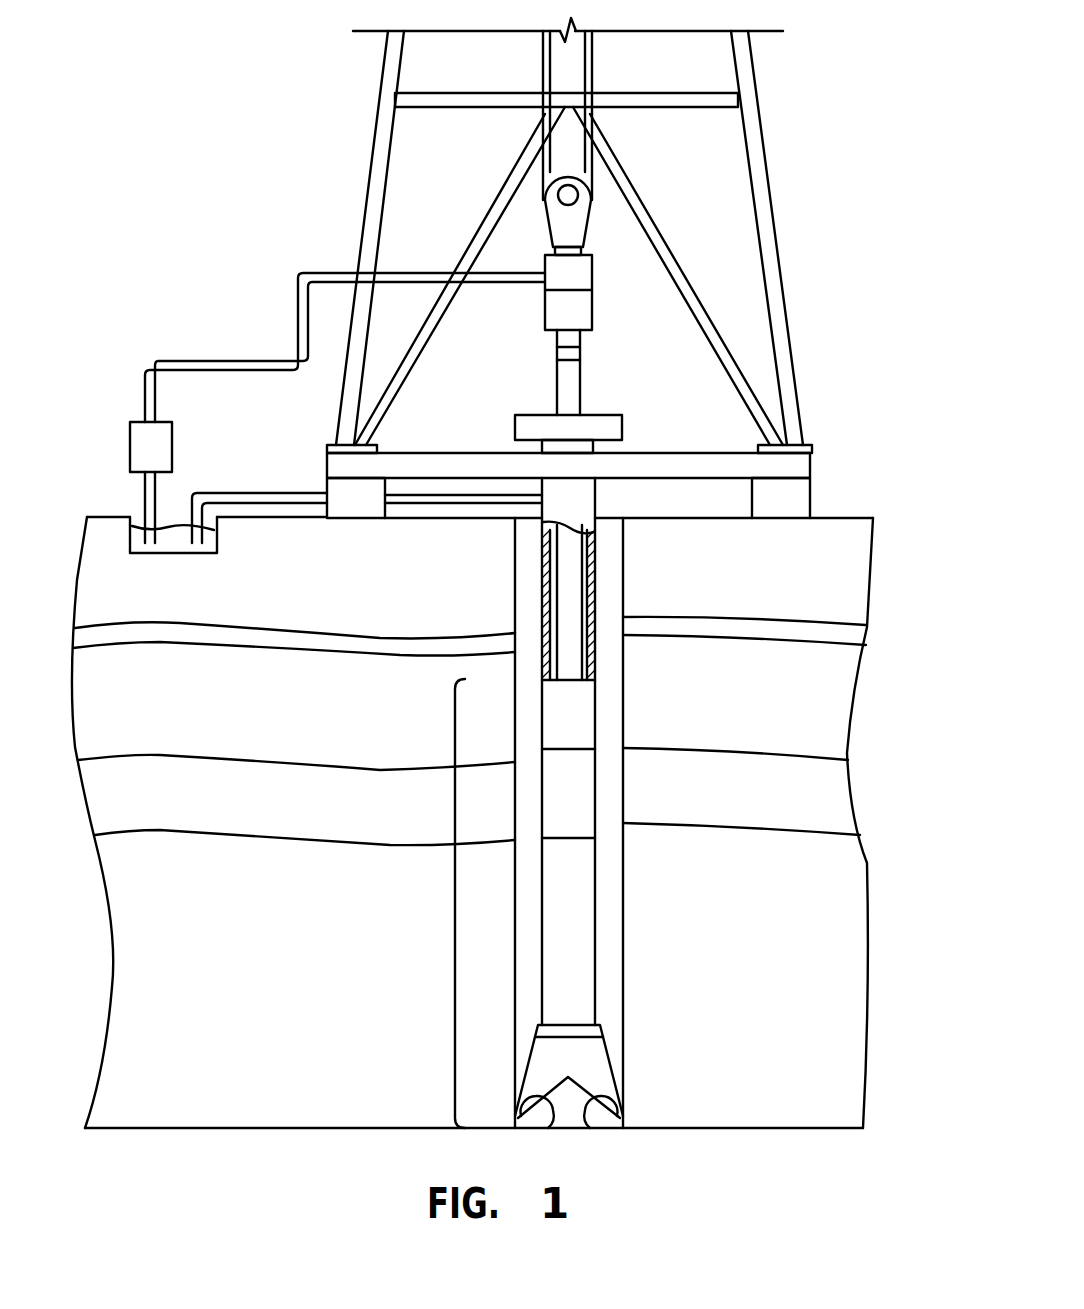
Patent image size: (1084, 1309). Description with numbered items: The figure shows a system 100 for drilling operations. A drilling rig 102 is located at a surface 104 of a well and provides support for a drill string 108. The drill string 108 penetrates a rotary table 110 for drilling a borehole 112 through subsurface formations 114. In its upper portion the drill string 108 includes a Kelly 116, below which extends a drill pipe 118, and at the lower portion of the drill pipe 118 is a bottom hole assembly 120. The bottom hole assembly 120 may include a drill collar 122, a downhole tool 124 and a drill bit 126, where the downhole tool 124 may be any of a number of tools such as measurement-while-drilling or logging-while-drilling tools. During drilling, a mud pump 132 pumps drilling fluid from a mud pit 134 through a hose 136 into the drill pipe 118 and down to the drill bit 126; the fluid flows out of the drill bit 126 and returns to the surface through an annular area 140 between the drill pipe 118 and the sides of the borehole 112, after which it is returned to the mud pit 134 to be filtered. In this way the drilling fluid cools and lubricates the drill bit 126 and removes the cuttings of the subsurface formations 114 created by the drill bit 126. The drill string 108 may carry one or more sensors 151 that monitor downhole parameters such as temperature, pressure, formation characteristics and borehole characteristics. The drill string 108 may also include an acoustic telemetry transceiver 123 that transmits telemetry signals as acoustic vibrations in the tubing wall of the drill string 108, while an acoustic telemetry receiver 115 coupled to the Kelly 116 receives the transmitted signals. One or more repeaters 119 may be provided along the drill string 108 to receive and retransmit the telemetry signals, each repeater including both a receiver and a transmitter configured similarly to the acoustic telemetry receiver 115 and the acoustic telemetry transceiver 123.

The system 100 is at (163, 85).
The drilling rig 102 is at (778, 233).
The surface 104 is at (850, 517).
The drill string 108 is at (541, 570).
The rotary table 110 is at (605, 415).
The borehole 112 is at (605, 568).
The subsurface formations 114 is at (880, 627).
The acoustic telemetry receiver 115 is at (583, 355).
The Kelly 116 is at (556, 389).
The drill pipe 118 is at (577, 661).
The repeaters 119 is at (578, 720).
The bottom hole assembly 120 is at (455, 902).
The drill collar 122 is at (540, 762).
The acoustic telemetry transceiver 123 is at (583, 942).
The downhole tool 124 is at (598, 893).
The drill bit 126 is at (597, 1060).
The mud pump 132 is at (129, 445).
The mud pit 134 is at (172, 554).
The hose 136 is at (334, 270).
The annular area 140 is at (525, 604).
The sensors 151 is at (580, 800).